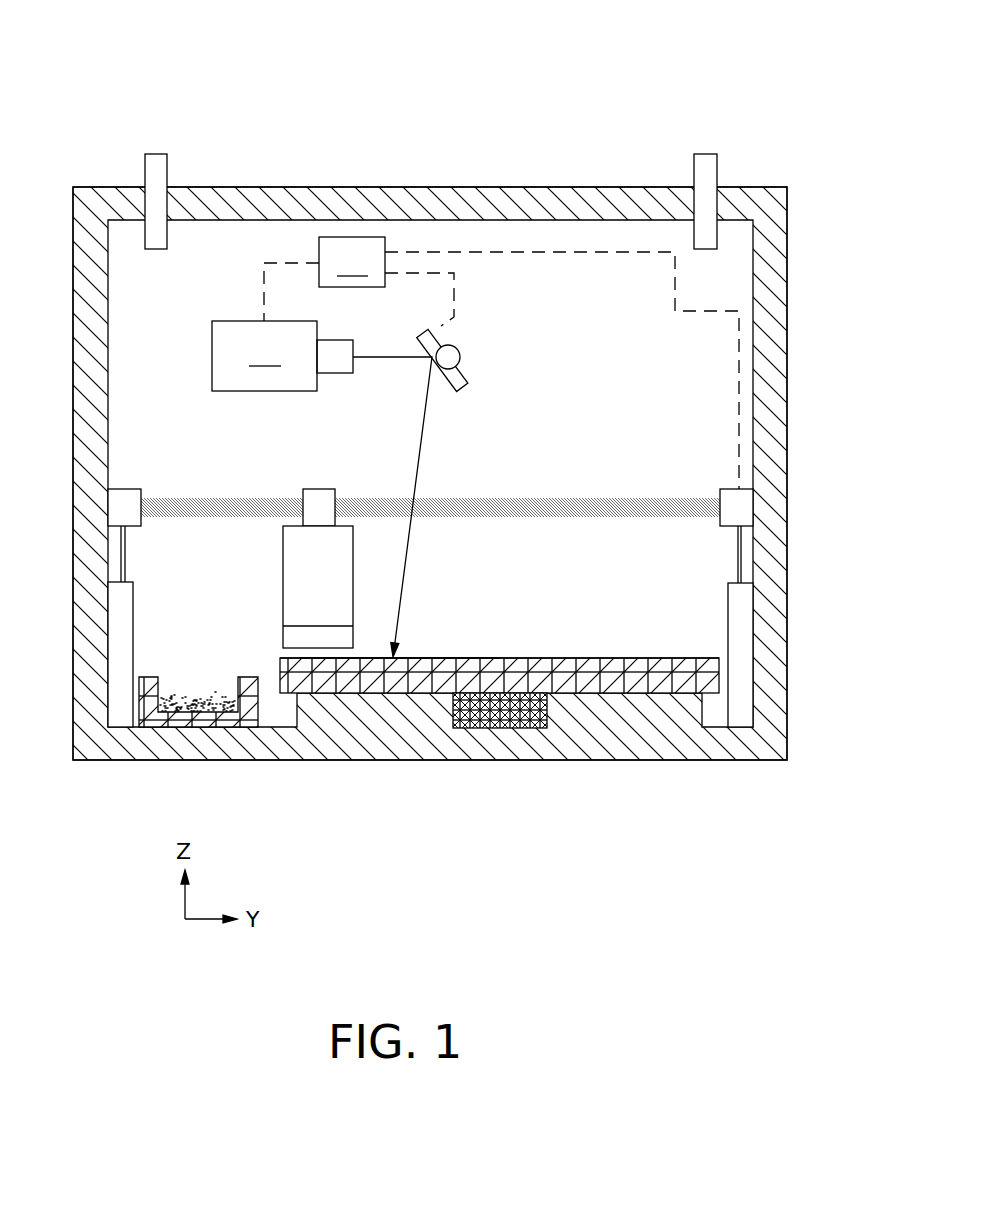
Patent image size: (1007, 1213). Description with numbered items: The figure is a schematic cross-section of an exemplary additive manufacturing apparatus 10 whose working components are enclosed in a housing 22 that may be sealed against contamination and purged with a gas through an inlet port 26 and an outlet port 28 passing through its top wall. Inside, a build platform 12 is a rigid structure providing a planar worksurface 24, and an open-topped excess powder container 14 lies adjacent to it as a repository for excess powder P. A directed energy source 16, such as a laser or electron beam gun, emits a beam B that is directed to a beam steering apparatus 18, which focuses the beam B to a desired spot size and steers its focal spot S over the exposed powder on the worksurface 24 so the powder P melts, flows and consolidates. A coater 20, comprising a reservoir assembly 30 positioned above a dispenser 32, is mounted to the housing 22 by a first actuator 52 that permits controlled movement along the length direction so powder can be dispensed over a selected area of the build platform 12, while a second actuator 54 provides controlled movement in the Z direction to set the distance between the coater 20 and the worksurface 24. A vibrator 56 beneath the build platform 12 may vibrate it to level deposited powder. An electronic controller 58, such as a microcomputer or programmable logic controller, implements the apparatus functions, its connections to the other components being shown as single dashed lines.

The additive manufacturing apparatus 10 is at (430, 77).
The build platform 12 is at (649, 658).
The excess powder container 14 is at (162, 687).
The directed energy source 16 is at (282, 356).
The beam steering apparatus 18 is at (433, 338).
The coater 20 is at (294, 568).
The housing 22 is at (768, 280).
The worksurface 24 is at (500, 657).
The inlet port 26 is at (152, 153).
The outlet port 28 is at (707, 153).
The reservoir assembly 30 is at (338, 548).
The dispenser 32 is at (330, 630).
The first actuator 52 is at (661, 466).
The second actuator 54 is at (125, 567).
The vibrator 56 is at (503, 715).
The electronic controller 58 is at (501, 363).
The beam B is at (422, 442).
The focal spot S is at (392, 657).
The powder P is at (218, 690).